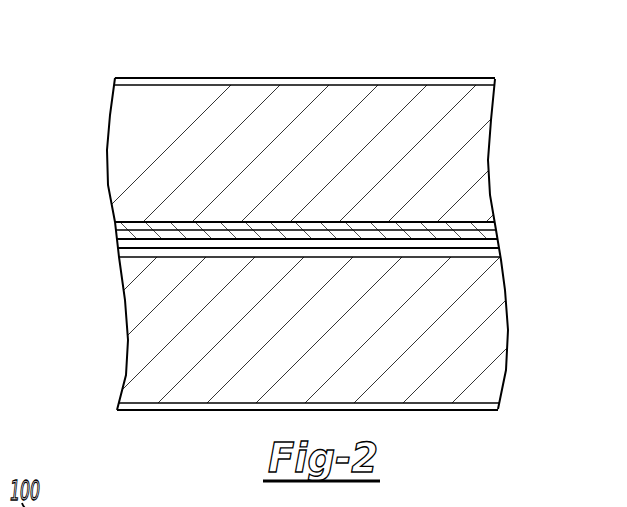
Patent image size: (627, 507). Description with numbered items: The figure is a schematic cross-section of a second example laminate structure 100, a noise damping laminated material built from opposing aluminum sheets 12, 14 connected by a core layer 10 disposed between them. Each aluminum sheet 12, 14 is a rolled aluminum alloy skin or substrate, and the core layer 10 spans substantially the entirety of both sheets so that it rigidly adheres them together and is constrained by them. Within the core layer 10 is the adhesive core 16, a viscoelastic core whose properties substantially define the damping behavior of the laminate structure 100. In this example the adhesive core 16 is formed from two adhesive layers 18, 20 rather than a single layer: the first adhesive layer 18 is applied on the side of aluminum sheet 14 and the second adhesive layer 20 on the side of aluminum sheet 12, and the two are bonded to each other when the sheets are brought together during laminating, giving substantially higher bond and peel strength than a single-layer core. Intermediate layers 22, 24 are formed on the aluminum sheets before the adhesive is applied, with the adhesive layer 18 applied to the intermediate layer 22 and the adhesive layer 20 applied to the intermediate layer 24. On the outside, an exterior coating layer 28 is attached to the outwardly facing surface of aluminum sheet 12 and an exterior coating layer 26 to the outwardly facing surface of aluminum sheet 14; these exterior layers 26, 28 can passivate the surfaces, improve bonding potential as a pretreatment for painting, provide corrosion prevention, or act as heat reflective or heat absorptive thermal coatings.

The laminate structure 100 is at (50, 75).
The core layer 10 is at (55, 245).
The aluminum sheet 12 is at (107, 167).
The aluminum sheet 14 is at (128, 333).
The adhesive core 16 is at (560, 238).
The first adhesive layer 18 is at (498, 246).
The second adhesive layer 20 is at (496, 232).
The intermediate layer 22 is at (115, 227).
The intermediate layer 24 is at (117, 251).
The exterior coating layer 26 is at (498, 407).
The exterior coating layer 28 is at (495, 80).